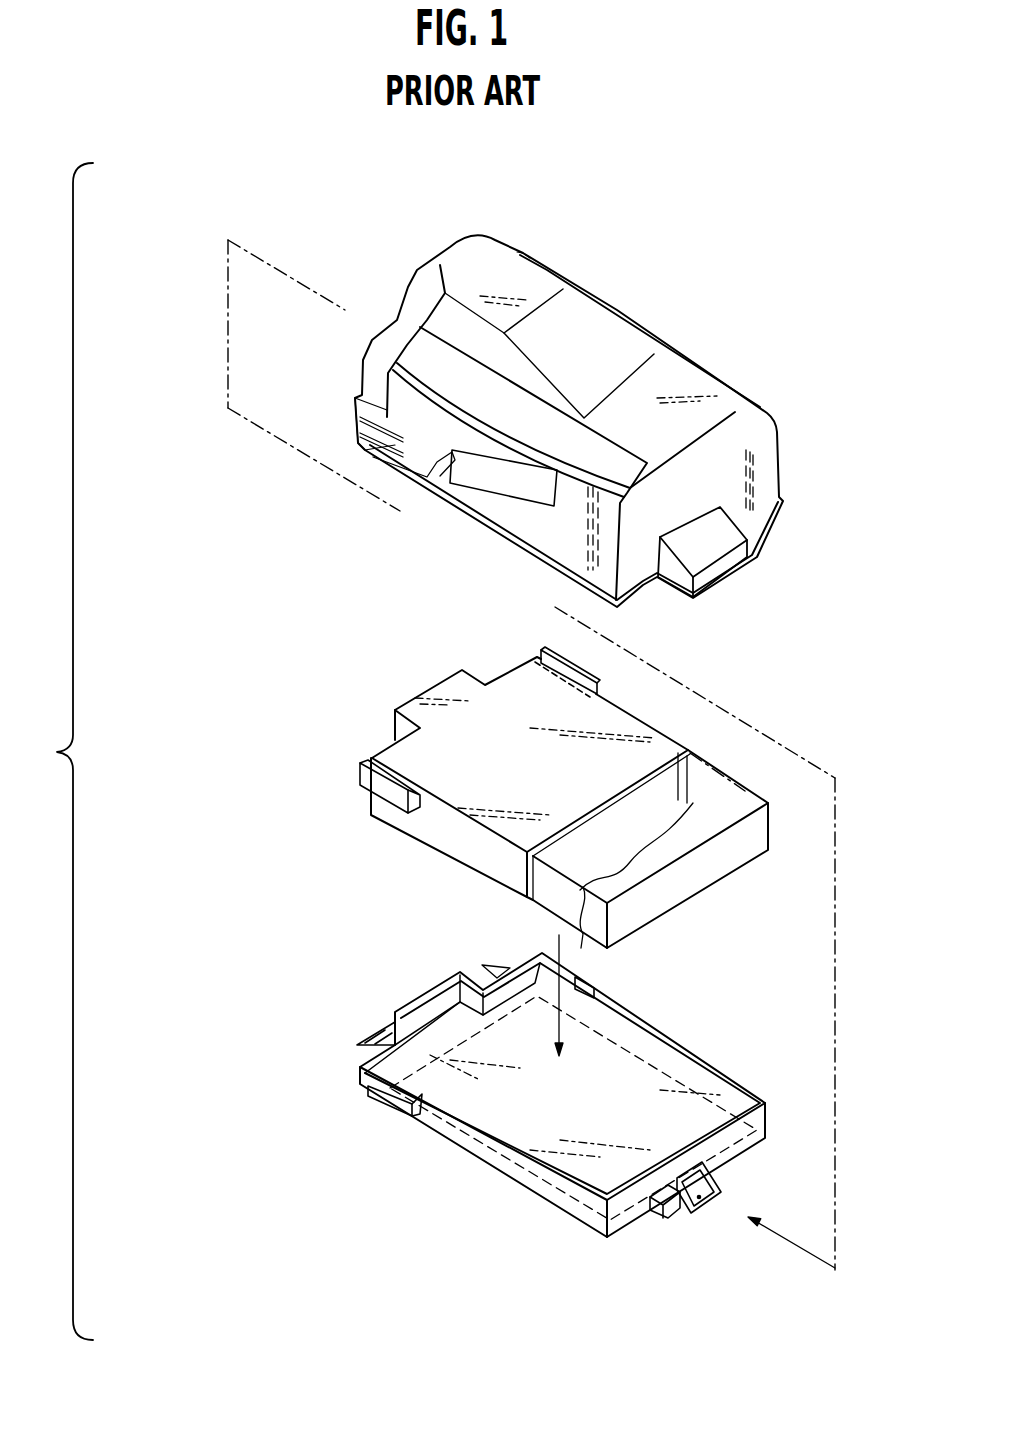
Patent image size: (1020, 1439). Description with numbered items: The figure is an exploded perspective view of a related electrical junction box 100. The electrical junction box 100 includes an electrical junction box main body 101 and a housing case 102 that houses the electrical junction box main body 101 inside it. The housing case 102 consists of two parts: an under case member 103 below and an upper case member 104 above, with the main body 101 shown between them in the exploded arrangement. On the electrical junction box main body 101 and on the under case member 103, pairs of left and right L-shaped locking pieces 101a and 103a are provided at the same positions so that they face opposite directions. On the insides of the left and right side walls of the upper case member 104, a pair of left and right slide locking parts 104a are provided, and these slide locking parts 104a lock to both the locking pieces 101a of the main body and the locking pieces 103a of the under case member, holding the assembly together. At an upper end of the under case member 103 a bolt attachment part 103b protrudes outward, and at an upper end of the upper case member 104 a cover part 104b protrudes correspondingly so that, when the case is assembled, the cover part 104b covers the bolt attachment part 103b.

The electrical junction box 100 is at (780, 285).
The electrical junction box main body 101 is at (693, 873).
The L-shaped locking piece 101a is at (545, 650).
The housing case 102 is at (188, 683).
The under case member 103 is at (398, 993).
The L-shaped locking piece 103a is at (580, 979).
The bolt attachment part 103b is at (708, 1215).
The upper case member 104 is at (432, 503).
The slide locking part 104a is at (358, 423).
The cover part 104b is at (727, 568).